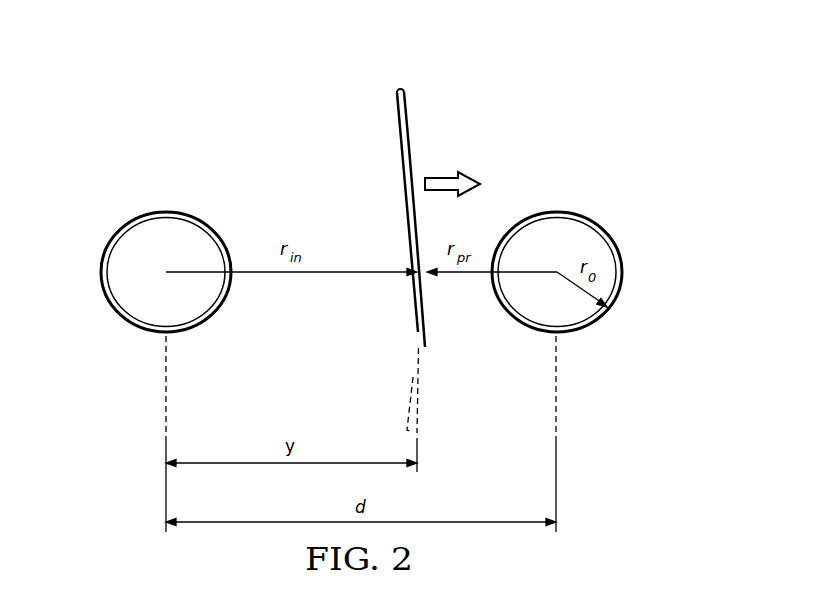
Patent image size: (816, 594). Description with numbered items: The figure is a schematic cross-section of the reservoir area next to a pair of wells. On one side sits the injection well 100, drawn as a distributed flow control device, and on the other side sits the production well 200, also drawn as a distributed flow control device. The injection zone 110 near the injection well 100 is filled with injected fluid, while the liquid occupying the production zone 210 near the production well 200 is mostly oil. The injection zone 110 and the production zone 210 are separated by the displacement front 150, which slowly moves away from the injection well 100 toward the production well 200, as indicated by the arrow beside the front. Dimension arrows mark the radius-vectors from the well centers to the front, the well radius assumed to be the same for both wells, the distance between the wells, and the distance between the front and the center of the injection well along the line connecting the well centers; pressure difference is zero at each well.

The injection well 100 is at (148, 212).
The injection zone 110 is at (212, 99).
The displacement front 150 is at (405, 143).
The production well 200 is at (590, 192).
The production zone 210 is at (623, 75).